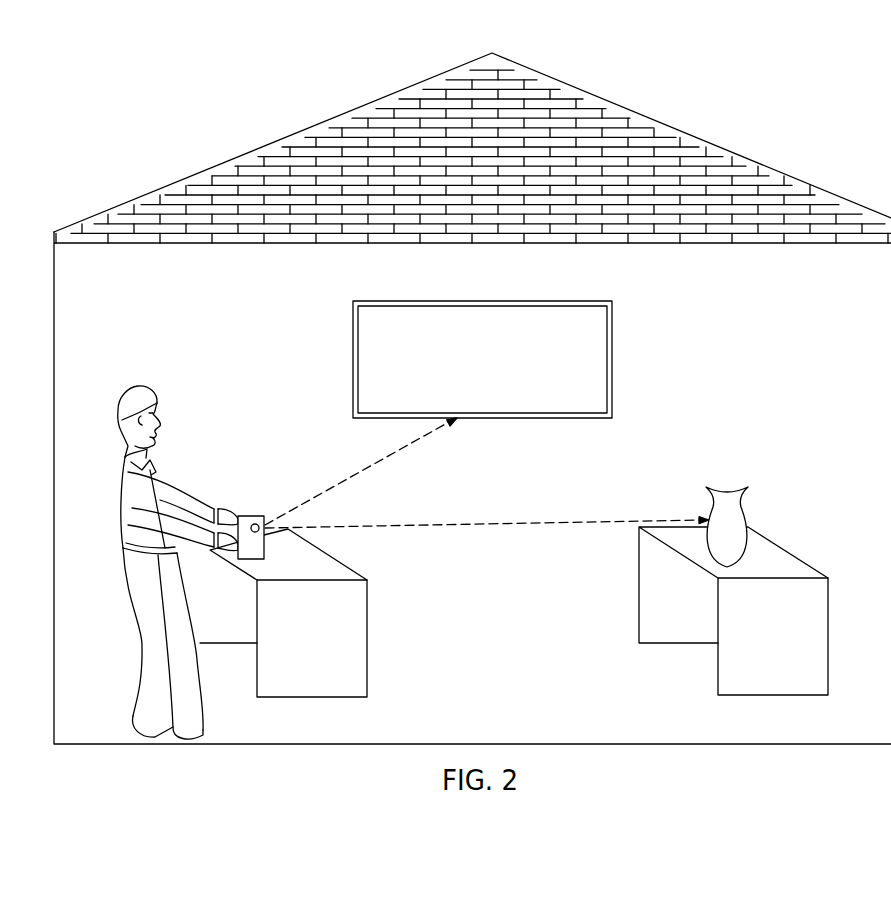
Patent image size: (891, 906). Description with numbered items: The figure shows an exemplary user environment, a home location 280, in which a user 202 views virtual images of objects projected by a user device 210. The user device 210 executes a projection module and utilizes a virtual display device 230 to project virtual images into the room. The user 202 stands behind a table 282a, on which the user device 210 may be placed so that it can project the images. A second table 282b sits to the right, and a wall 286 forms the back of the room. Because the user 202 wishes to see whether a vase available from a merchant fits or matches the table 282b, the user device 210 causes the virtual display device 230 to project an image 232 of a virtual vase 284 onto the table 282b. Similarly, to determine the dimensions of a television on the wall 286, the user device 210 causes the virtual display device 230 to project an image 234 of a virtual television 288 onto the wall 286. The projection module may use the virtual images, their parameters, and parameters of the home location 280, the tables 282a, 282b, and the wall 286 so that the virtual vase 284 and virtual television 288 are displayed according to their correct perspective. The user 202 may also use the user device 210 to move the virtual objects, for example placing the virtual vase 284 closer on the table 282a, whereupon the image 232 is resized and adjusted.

The home location 280 is at (578, 44).
The wall 286 is at (503, 282).
The virtual television 288 is at (612, 366).
The user 202 is at (125, 400).
The user device 210 is at (245, 515).
The virtual display device 230 is at (262, 517).
The image 232 is at (540, 523).
The image 234 is at (388, 457).
The table 282a is at (367, 637).
The table 282b is at (639, 590).
The virtual vase 284 is at (726, 493).